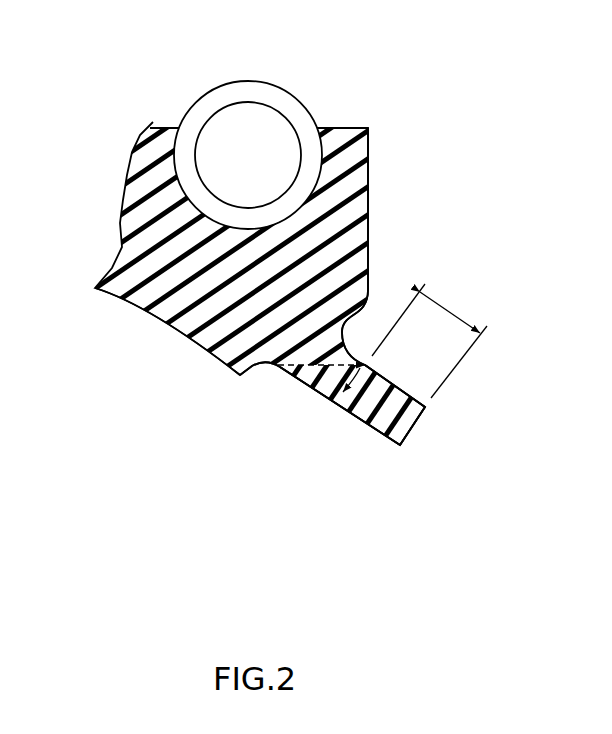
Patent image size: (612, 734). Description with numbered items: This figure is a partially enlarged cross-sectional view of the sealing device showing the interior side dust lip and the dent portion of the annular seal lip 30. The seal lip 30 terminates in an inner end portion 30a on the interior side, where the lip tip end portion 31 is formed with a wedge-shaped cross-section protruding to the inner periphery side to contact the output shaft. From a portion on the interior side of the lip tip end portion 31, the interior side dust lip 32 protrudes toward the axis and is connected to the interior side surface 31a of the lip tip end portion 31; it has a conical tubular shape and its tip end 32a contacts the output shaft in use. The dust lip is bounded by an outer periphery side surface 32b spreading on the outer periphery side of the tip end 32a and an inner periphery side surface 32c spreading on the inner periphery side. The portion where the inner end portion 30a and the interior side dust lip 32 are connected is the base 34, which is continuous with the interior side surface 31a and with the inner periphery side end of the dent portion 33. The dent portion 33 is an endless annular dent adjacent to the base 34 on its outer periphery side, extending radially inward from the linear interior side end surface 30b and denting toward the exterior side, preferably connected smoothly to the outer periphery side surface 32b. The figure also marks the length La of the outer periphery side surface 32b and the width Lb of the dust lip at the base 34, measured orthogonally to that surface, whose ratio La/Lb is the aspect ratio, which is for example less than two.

The seal lip 30 is at (105, 103).
The inner end portion 30a is at (192, 268).
The interior side end surface 30b is at (368, 172).
The lip tip end portion 31 is at (236, 381).
The interior side surface 31a is at (257, 372).
The interior side dust lip 32 is at (430, 426).
The tip end 32a is at (413, 440).
The outer periphery side surface 32b is at (390, 381).
The inner periphery side surface 32c is at (367, 426).
The dent portion 33 is at (352, 308).
The base 34 is at (322, 368).
The length of outer periphery side surface La is at (447, 312).
The width of interior side dust lip at base Lb is at (330, 390).